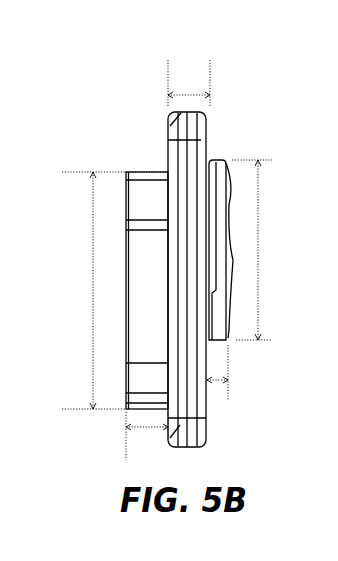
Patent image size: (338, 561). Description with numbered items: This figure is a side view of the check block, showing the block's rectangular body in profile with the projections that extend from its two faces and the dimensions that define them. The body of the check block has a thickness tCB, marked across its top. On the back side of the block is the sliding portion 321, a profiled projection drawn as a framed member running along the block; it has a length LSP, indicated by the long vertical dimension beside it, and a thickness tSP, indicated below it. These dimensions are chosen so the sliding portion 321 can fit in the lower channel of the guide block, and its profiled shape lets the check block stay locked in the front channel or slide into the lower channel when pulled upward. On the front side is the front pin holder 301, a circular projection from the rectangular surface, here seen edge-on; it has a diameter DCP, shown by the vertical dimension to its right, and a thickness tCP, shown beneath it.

The sliding portion 321 is at (130, 170).
The front pin holder 301 is at (217, 158).
The thickness of the check block tCB is at (189, 83).
The length of the sliding portion LSP is at (112, 290).
The diameter of the circular portion DCP is at (264, 250).
The thickness of the circular portion tCP is at (222, 381).
The thickness of the sliding portion tSP is at (147, 436).